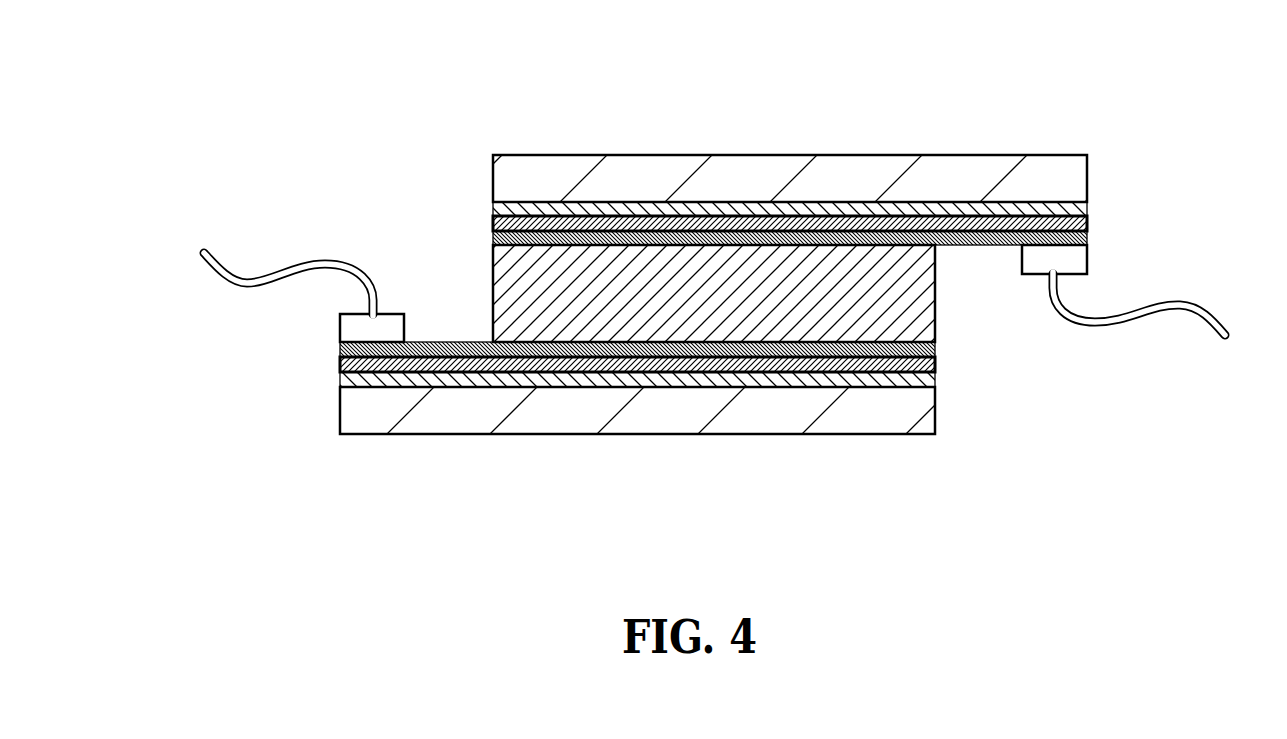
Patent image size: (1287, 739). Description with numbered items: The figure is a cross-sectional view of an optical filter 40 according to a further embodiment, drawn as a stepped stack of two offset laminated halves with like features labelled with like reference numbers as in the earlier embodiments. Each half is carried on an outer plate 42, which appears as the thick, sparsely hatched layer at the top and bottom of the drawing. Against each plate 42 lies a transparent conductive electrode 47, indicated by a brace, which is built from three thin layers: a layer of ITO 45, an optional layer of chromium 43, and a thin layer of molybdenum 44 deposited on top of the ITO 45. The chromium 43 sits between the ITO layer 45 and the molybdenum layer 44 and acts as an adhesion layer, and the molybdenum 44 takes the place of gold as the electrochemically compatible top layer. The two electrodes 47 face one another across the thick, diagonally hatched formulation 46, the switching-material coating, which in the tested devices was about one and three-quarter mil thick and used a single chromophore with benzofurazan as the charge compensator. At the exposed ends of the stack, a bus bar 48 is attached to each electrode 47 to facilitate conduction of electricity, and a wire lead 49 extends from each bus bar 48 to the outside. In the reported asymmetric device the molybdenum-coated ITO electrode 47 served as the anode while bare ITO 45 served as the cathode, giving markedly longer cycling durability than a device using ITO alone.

The electrochemical cell assembly 40 is at (1028, 79).
The end plate 42 is at (755, 155).
The chromium layer 43 is at (1088, 224).
The molybdenum layer 44 is at (1088, 238).
The ITO layer 45 is at (1088, 208).
The formulation 46 is at (492, 298).
The transparent conductive electrode 47 is at (487, 248).
The terminal contact 48 is at (1088, 262).
The lead wire 49 is at (222, 272).